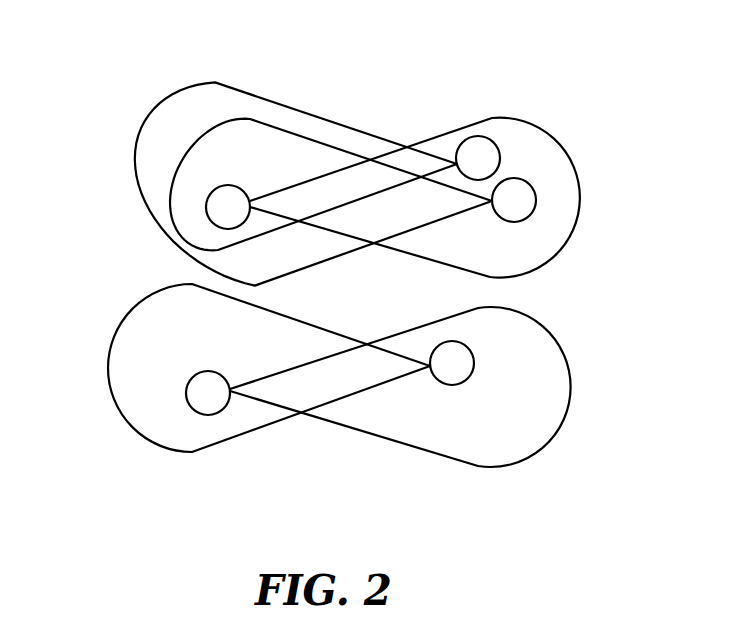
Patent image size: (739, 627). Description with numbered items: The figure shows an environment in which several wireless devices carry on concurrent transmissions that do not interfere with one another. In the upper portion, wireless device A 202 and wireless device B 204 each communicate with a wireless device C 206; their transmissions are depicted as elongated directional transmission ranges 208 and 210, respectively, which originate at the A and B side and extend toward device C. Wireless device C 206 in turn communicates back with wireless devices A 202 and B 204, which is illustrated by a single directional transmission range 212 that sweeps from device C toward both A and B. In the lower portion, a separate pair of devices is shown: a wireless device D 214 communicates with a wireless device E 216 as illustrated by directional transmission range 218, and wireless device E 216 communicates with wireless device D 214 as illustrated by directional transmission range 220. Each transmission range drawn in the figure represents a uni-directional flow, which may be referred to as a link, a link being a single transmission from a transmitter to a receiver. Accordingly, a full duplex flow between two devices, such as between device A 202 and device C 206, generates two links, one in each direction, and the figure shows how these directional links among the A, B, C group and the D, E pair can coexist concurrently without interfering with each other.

The wireless device A 202 is at (481, 136).
The wireless device B 204 is at (522, 179).
The wireless device C 206 is at (231, 185).
The directional transmission range 208 is at (216, 83).
The directional transmission range 210 is at (171, 212).
The directional transmission range 212 is at (564, 245).
The wireless device D 214 is at (207, 371).
The wireless device E 216 is at (451, 385).
The directional transmission range 218 is at (507, 464).
The directional transmission range 220 is at (153, 442).